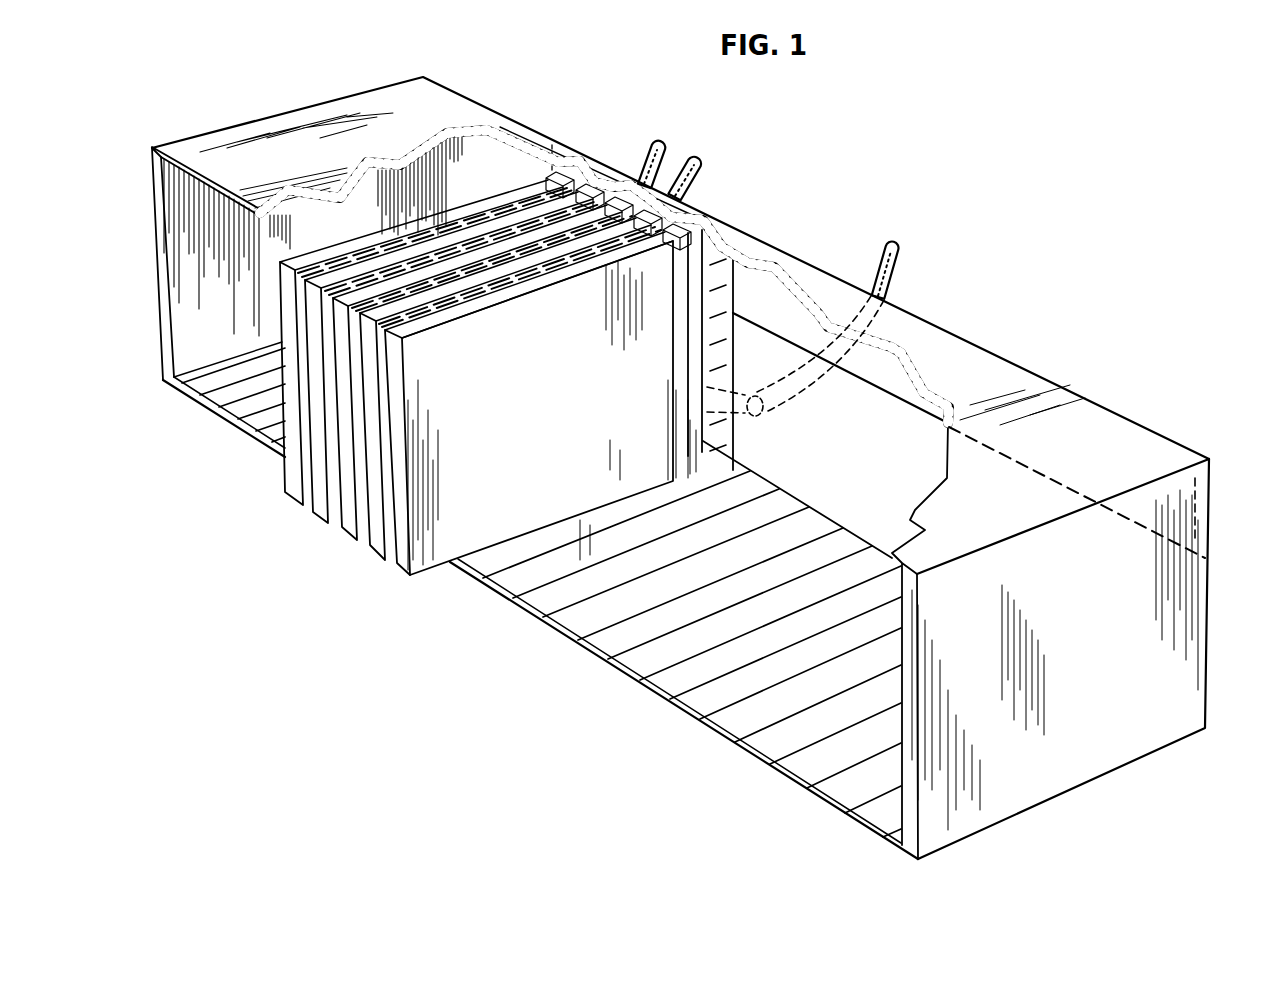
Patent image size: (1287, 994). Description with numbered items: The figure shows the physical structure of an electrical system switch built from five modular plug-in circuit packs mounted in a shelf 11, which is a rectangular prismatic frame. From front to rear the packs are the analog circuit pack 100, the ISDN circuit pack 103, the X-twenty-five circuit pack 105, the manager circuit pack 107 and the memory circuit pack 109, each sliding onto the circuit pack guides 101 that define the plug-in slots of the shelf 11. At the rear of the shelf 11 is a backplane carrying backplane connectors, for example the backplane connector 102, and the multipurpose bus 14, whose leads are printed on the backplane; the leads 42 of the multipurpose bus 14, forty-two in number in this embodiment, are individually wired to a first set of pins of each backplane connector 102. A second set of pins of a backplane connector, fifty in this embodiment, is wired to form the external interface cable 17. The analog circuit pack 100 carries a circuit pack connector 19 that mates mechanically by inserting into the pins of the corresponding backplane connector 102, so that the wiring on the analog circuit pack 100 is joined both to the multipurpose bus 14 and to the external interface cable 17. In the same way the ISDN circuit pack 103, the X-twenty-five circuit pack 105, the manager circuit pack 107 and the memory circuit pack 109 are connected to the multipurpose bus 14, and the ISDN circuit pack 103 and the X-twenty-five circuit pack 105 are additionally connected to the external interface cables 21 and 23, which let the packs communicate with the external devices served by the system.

The shelf 11 is at (1130, 748).
The multipurpose bus 14 is at (1098, 506).
The external interface cable 17 is at (902, 257).
The circuit pack connector 19 is at (770, 248).
The external interface cable 21 is at (703, 161).
The external interface cable 23 is at (665, 150).
The connector 42 is at (903, 389).
The analog circuit pack 100 is at (405, 577).
The circuit pack guides 101 is at (518, 563).
The backplane connector 102 is at (735, 438).
The ISDN circuit pack 103 is at (387, 550).
The X.25 circuit pack 105 is at (353, 530).
The manager circuit pack 107 is at (320, 508).
The memory circuit pack 109 is at (287, 487).